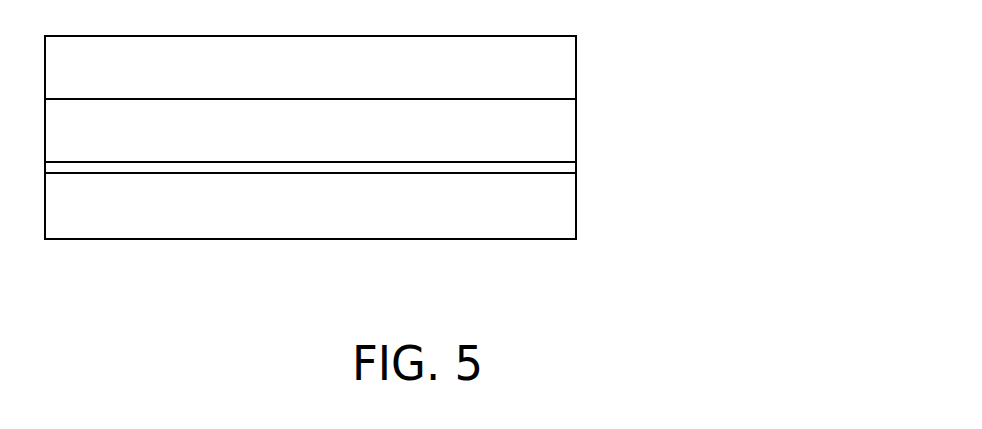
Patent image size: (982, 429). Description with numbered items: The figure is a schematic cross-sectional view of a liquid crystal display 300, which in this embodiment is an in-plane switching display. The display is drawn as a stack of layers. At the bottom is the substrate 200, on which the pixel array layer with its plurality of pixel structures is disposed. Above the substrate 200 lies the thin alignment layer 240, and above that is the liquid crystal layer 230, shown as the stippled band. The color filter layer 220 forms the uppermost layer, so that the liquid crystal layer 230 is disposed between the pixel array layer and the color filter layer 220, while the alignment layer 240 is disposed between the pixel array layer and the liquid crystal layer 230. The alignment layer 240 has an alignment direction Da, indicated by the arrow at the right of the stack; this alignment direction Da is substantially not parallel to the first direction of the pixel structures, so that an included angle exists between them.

The substrate 200 is at (535, 208).
The color filter layer 220 is at (532, 67).
The liquid crystal layer 230 is at (535, 128).
The alignment layer 240 is at (543, 167).
The liquid crystal display 300 is at (747, 295).
The alignment direction Da is at (671, 175).